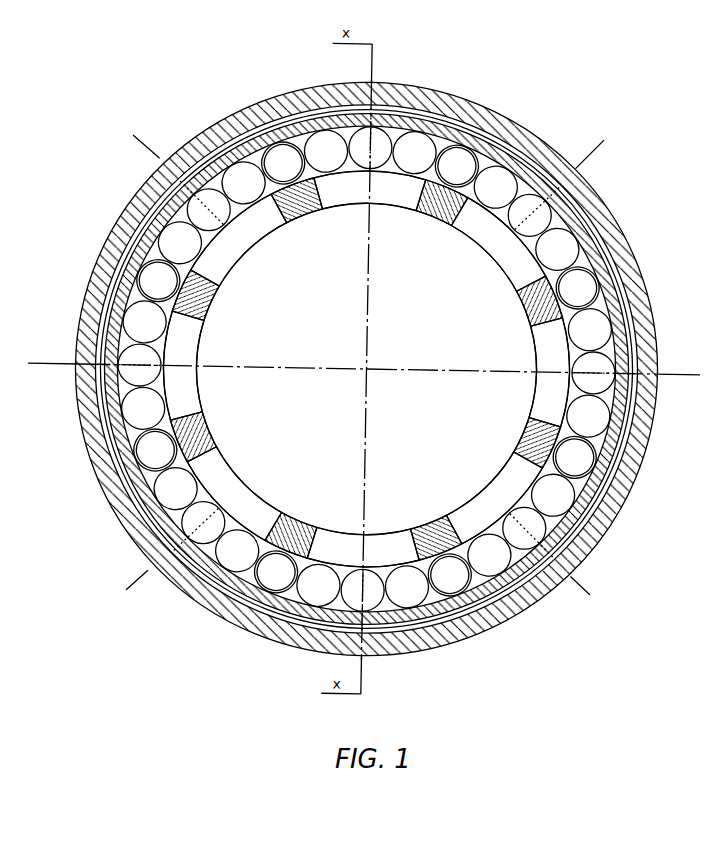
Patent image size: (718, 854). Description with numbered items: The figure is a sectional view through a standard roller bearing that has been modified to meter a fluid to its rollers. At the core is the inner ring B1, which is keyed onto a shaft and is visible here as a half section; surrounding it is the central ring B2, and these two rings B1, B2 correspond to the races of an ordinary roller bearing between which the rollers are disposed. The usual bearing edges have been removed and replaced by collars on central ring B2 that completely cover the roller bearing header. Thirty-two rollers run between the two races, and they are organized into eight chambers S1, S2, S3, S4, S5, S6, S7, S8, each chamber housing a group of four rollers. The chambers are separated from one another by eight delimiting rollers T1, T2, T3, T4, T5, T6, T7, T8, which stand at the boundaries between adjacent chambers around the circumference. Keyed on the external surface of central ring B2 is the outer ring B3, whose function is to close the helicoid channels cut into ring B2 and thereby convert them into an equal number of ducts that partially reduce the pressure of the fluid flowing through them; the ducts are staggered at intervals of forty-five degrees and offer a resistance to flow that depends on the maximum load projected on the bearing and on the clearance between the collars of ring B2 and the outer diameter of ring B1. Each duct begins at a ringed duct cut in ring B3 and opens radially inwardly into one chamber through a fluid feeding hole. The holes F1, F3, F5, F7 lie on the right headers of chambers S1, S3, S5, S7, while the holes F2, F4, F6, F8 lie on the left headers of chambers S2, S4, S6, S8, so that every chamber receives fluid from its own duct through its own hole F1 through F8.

The fluid feeding hole F1 is at (395, 65).
The fluid feeding hole F2 is at (153, 156).
The fluid feeding hole F3 is at (49, 352).
The fluid feeding hole F4 is at (139, 586).
The fluid feeding hole F5 is at (395, 668).
The fluid feeding hole F6 is at (606, 584).
The fluid feeding hole F7 is at (677, 363).
The fluid feeding hole F8 is at (611, 154).
The chamber S1 is at (369, 198).
The chamber S2 is at (239, 240).
The chamber S3 is at (193, 366).
The chamber S4 is at (234, 493).
The chamber S5 is at (363, 538).
The chamber S6 is at (493, 497).
The chamber S7 is at (538, 372).
The chamber S8 is at (498, 245).
The delimiting roller T1 is at (284, 172).
The delimiting roller T2 is at (185, 294).
The delimiting roller T3 is at (166, 376).
The delimiting roller T4 is at (291, 547).
The delimiting roller T5 is at (443, 547).
The delimiting roller T6 is at (549, 443).
The delimiting roller T7 is at (550, 295).
The delimiting roller T8 is at (427, 178).
The ring B1 is at (451, 542).
The central ring B2 is at (526, 569).
The ring B3 is at (517, 604).